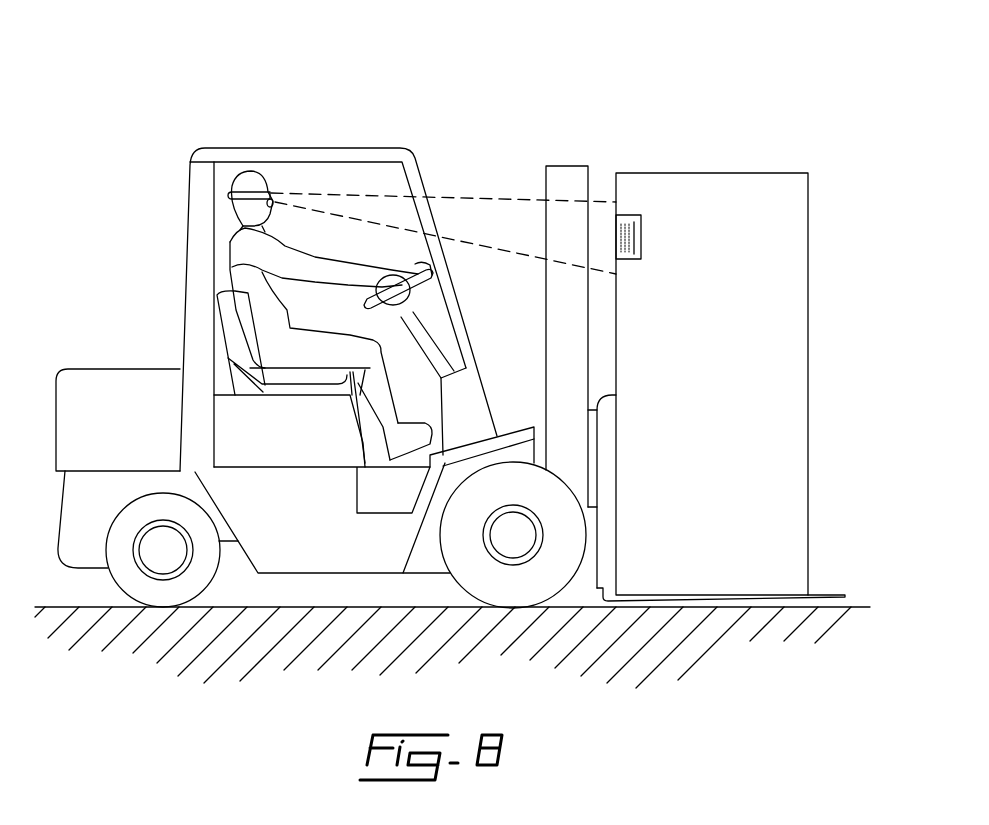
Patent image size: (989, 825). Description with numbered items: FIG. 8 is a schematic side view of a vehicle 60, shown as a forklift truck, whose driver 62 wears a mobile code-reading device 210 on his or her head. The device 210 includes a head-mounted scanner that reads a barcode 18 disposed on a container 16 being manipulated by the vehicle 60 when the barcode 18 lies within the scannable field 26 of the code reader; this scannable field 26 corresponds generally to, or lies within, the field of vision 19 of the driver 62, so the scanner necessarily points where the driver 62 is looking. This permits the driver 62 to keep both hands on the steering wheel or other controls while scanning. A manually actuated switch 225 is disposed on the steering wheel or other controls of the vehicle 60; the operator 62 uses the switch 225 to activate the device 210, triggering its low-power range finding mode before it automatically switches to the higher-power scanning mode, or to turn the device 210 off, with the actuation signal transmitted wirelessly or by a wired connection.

The vehicle 60 is at (447, 146).
The driver 62 is at (243, 283).
The mobile code-reading device 210 is at (268, 188).
The manually actuated switch 225 is at (428, 264).
The scannable field 26 is at (460, 162).
The field of vision 19 is at (515, 195).
The barcode 18 is at (627, 245).
The container 16 is at (786, 264).